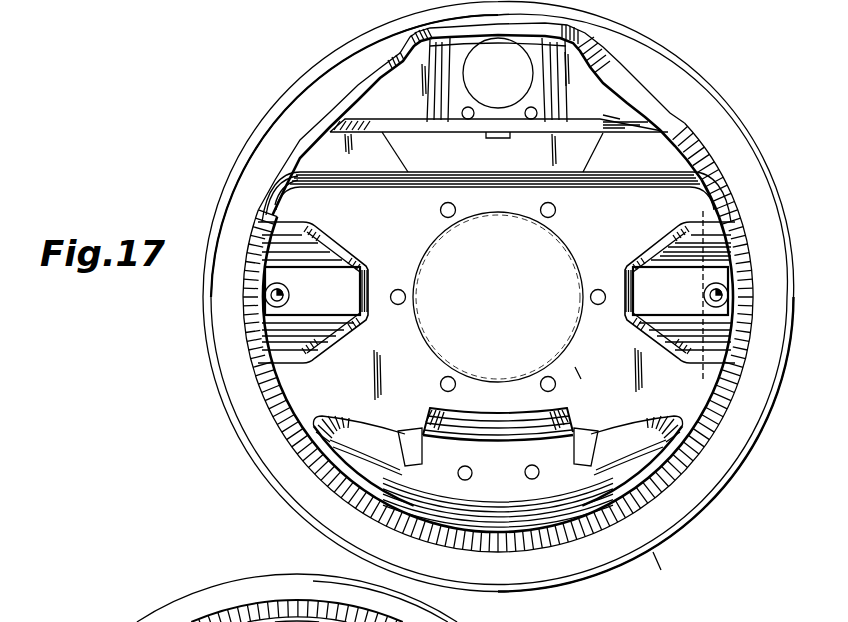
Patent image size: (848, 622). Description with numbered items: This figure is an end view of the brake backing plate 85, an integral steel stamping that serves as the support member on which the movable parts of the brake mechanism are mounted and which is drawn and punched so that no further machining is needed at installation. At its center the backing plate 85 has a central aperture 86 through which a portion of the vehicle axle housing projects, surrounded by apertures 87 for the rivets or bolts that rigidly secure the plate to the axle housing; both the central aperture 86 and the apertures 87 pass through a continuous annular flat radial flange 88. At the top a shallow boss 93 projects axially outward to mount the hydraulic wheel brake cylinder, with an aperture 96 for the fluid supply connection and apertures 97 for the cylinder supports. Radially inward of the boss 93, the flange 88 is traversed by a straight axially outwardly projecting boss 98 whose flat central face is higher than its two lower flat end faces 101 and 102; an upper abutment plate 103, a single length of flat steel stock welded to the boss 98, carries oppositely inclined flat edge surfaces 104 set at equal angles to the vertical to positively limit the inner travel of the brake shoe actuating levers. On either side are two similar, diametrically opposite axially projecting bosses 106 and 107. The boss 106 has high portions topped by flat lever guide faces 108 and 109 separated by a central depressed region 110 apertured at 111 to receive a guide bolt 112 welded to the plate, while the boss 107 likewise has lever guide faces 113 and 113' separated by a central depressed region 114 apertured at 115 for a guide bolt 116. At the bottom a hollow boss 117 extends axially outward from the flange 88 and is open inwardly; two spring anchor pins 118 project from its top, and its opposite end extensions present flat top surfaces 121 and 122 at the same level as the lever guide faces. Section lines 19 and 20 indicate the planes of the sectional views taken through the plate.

The backing plate 85 is at (528, 593).
The central aperture 86 is at (437, 352).
The apertures 87 is at (407, 292).
The annular flat radial flange 88 is at (588, 243).
The shallow boss 93 is at (547, 88).
The aperture 96 is at (520, 46).
The apertures 97 is at (529, 107).
The straight axially outwardly projecting boss 98 is at (664, 139).
The flat end face 101 is at (350, 168).
The flat end face 102 is at (639, 136).
The upper abutment plate 103 is at (417, 134).
The oppositely inclined flat edge surfaces 104 is at (386, 170).
The boss 106 is at (340, 257).
The boss 107 is at (655, 282).
The flat lever guide face 108 is at (297, 250).
The flat lever guide face 109 is at (312, 338).
The central depressed region 110 is at (350, 312).
The aperture 111 is at (277, 283).
The guide bolt 112 is at (290, 295).
The flat lever guide face 113 is at (662, 248).
The flat lever guide face 113' is at (641, 337).
The central depressed region 114 is at (630, 321).
The aperture 115 is at (692, 268).
The guide bolt 116 is at (704, 295).
The hollow boss 117 is at (518, 513).
The spring anchor pins 118 is at (526, 466).
The flat top surface 121 is at (367, 467).
The flat top surface 122 is at (633, 480).
The section line 19- 19 is at (562, 394).
The section line 20- 20 is at (703, 211).